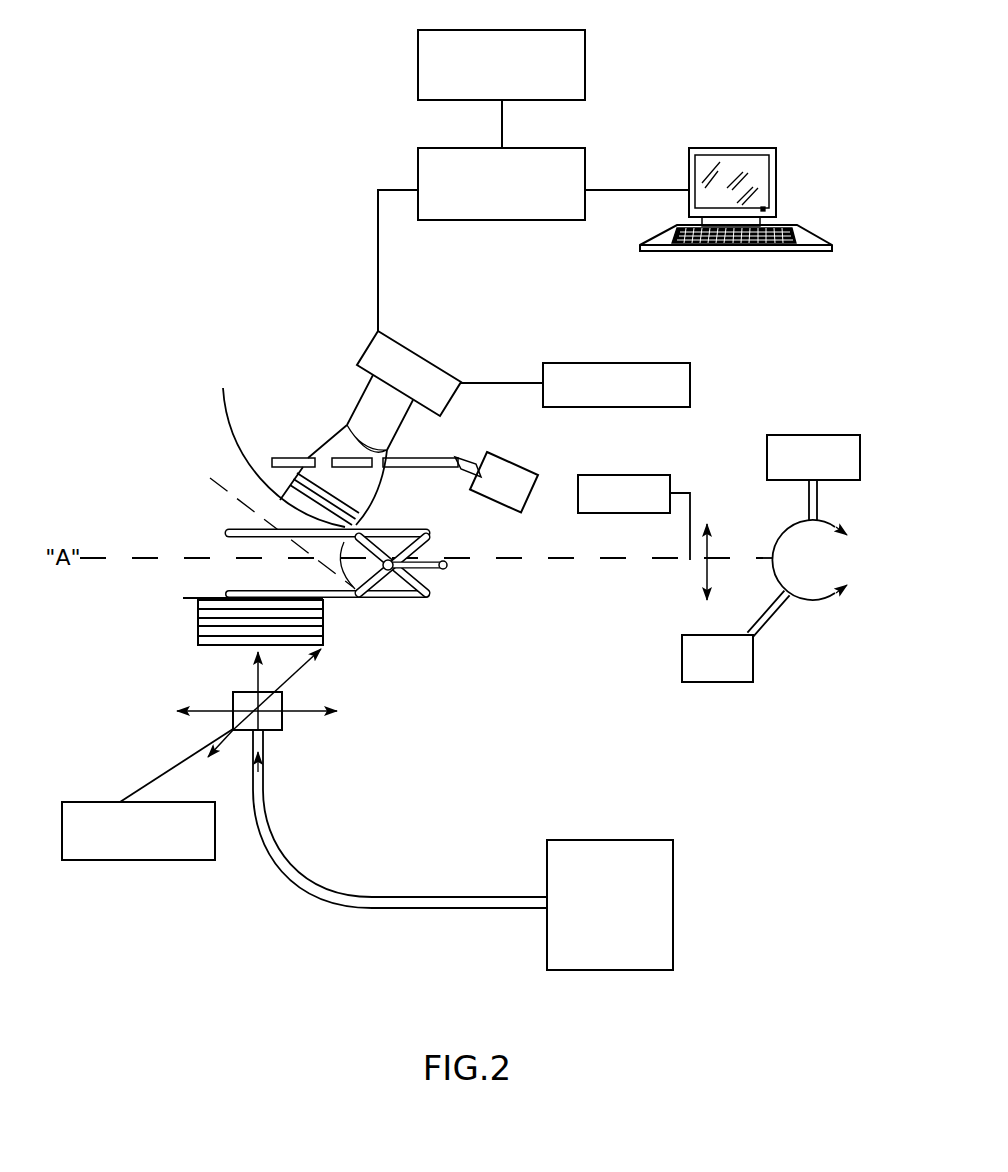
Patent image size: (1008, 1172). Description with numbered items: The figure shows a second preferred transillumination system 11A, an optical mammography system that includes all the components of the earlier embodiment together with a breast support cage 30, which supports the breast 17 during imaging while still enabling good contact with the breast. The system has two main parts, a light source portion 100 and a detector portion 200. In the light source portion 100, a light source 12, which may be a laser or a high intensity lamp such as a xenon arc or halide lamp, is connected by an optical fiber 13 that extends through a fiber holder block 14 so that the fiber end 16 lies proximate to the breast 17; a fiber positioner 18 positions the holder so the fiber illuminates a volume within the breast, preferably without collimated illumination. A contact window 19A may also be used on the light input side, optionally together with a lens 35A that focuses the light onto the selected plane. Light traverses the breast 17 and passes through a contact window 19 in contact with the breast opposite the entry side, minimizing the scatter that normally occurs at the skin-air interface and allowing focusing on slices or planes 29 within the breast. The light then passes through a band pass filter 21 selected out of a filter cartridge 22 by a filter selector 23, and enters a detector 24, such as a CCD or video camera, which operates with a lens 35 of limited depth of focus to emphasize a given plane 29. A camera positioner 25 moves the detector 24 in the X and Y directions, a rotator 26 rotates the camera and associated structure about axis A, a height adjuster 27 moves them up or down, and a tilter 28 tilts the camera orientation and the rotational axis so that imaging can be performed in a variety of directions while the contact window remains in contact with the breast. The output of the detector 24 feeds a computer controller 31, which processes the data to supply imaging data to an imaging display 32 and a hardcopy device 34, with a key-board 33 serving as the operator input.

The second preferred transillumination system 11A is at (330, 207).
The light source 12 is at (602, 840).
The optical fiber 13 is at (395, 895).
The fiber holder block 14 is at (278, 732).
The fiber end 16 is at (237, 693).
The breast 17 is at (208, 534).
The fiber positioner 18 is at (77, 802).
The contact window 19 is at (372, 519).
The contact window 19A is at (331, 608).
The band pass filter 21 is at (352, 468).
The filter cartridge 22 is at (263, 440).
The filter selector 23 is at (522, 465).
The detector 24 is at (427, 358).
The camera positioner 25 is at (692, 390).
The rotator 26 is at (805, 433).
The height adjuster 27 is at (632, 473).
The tilter 28 is at (682, 653).
The selected plane 29 is at (193, 468).
The breast support cage 30 is at (430, 593).
The computer controller 31 is at (585, 168).
The imaging display 32 is at (722, 147).
The key-board 33 is at (725, 249).
The hardcopy device 34 is at (585, 78).
The lens 35 is at (410, 423).
The lens 35A is at (327, 642).
The light source portion 100 is at (263, 917).
The detector portion 200 is at (235, 287).